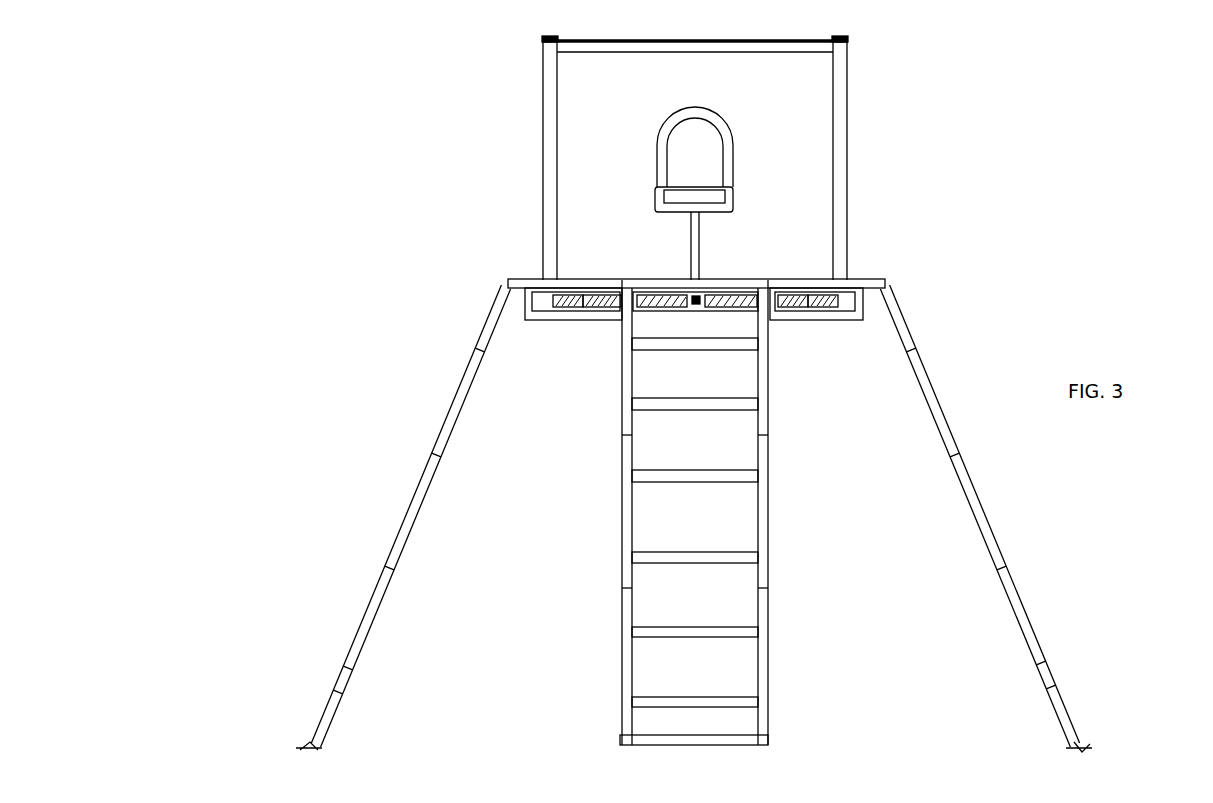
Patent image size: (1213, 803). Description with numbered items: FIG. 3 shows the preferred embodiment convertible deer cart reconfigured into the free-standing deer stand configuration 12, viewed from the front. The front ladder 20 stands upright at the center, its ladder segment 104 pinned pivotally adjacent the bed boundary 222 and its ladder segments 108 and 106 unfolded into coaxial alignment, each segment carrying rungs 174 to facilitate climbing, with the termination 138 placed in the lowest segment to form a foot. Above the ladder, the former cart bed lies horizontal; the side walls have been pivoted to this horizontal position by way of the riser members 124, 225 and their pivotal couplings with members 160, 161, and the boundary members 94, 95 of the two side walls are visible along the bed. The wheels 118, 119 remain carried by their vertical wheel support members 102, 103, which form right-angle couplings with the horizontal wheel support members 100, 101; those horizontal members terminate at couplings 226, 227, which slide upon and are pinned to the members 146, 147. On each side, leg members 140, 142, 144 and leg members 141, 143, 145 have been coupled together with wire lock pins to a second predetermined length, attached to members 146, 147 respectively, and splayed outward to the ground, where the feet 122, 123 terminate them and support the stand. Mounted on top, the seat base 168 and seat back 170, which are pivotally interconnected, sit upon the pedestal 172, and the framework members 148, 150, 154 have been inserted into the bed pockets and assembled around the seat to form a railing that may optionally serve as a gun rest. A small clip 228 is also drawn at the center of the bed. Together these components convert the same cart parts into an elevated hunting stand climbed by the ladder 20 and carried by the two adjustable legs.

The free-standing deer stand configuration 12 is at (768, 158).
The ladder 20 is at (705, 512).
The boundary member 94 is at (800, 296).
The boundary member 95 is at (596, 297).
The horizontal wheel support member 100 is at (864, 309).
The horizontal wheel support member 101 is at (498, 311).
The vertical wheel support member 102 is at (848, 320).
The vertical wheel support member 103 is at (549, 320).
The ladder segment 104 is at (622, 436).
The ladder segment 106 is at (620, 625).
The ladder segment 108 is at (622, 521).
The wheel 118 is at (744, 295).
The wheel 119 is at (566, 295).
The foot 122 is at (1084, 745).
The foot 123 is at (300, 744).
The riser member 124 is at (804, 312).
The termination 138 is at (768, 741).
The leg member 140 is at (904, 407).
The leg member 141 is at (462, 420).
The leg member 142 is at (1034, 660).
The leg member 143 is at (362, 648).
The leg member 144 is at (983, 546).
The leg member 145 is at (419, 506).
The member 146 is at (884, 285).
The member 147 is at (510, 282).
The framework member 148 is at (847, 132).
The framework member 150 is at (702, 54).
The framework member 154 is at (544, 144).
The member 160 is at (791, 319).
The member 161 is at (606, 306).
The seat bottom 168 is at (733, 202).
The seat top 170 is at (733, 155).
The pedestal 172 is at (699, 254).
The rungs 174 is at (718, 345).
The bed boundary 222 is at (662, 294).
The riser member 225 is at (586, 310).
The coupling 226 is at (854, 278).
The coupling 227 is at (528, 278).
The clip 228 is at (692, 304).